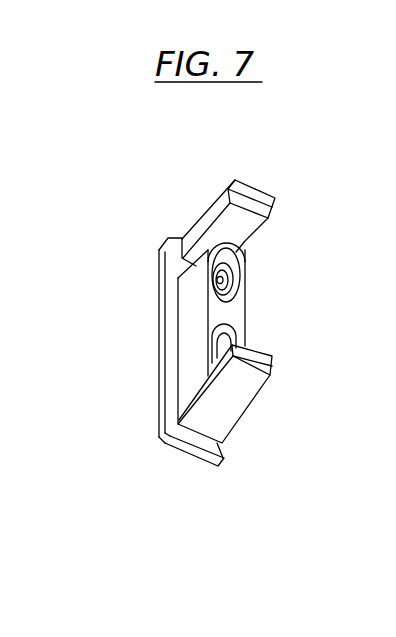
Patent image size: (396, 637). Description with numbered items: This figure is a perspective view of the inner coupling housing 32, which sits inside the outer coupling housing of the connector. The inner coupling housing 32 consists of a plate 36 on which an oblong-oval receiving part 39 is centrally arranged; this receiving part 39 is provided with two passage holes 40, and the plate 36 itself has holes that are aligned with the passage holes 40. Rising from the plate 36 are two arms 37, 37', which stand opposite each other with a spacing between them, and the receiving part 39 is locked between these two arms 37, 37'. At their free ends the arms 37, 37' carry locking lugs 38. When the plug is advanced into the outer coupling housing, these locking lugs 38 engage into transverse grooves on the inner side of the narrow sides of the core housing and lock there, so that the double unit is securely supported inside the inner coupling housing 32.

The inner coupling housing 32 is at (148, 194).
The plate 36 is at (158, 373).
The arm 37 is at (228, 189).
The arm 37' is at (247, 432).
The locking lug 38 is at (245, 212).
The receiving part 39 is at (235, 313).
The passage hole 40 is at (216, 284).